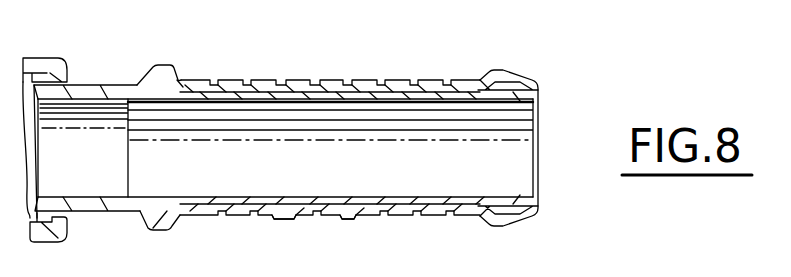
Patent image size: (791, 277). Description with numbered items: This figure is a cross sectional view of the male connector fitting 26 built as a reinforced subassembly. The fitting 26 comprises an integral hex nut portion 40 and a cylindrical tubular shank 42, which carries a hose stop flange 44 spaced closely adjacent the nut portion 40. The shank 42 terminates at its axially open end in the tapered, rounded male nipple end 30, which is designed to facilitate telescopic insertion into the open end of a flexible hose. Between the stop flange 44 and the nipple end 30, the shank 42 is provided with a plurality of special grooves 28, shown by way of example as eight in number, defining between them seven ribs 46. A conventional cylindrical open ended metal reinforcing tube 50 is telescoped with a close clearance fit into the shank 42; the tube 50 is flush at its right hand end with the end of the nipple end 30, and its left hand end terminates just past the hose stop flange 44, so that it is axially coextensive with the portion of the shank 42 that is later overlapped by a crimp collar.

The male connector fitting 26 is at (100, 228).
The grooves 28 is at (378, 214).
The rounded male nipple end 30 is at (520, 214).
The hex nut portion 40 is at (40, 58).
The tubular shank 42 is at (125, 82).
The hose stop flange 44 is at (168, 230).
The ribs 46 is at (280, 217).
The reinforcing tube 50 is at (490, 188).